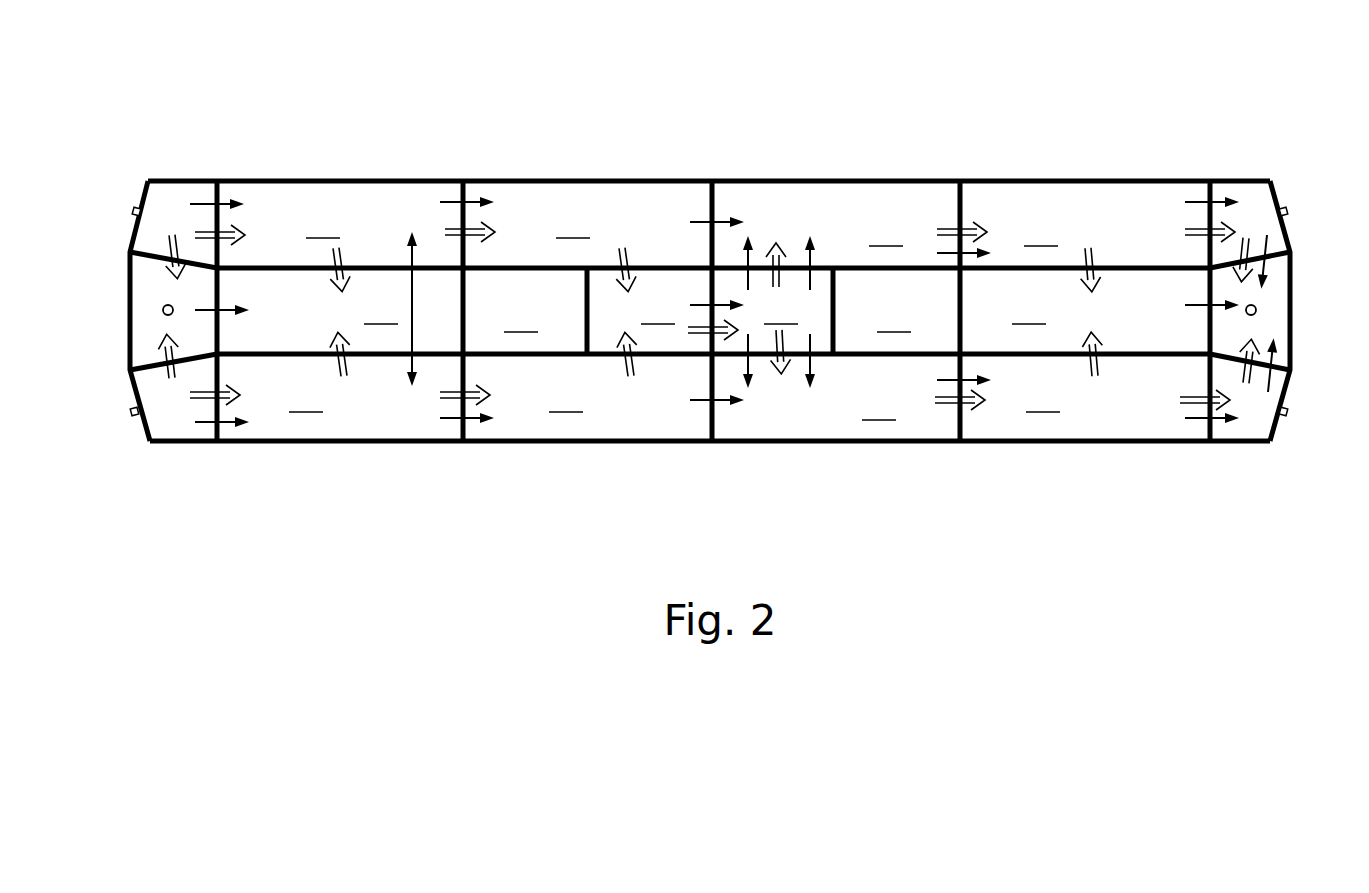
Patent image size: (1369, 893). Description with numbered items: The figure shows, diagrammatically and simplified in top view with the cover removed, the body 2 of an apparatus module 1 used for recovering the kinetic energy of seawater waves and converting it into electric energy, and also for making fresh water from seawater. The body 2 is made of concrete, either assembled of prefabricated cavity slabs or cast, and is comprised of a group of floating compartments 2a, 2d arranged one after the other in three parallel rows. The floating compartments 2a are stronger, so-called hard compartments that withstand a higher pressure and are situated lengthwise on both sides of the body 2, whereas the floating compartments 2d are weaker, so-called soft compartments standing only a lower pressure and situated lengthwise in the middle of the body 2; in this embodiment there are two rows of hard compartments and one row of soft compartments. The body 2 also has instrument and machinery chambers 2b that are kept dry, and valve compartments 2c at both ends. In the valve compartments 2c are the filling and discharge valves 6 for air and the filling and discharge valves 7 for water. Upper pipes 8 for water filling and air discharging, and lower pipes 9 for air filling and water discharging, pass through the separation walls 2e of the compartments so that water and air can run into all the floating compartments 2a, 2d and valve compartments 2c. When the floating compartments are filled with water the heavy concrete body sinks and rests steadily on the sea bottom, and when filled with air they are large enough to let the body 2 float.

The apparatus module 1 is at (1102, 63).
The body 2 is at (878, 181).
The floating compartments 2a is at (714, 312).
The instrument and machinery chambers 2b is at (706, 311).
The valve compartments 2c is at (175, 193).
The floating compartments 2d is at (715, 310).
The separation walls 2e is at (715, 203).
The filling and discharge valves for air 6 is at (160, 310).
The filling and discharge valves for water 7 is at (136, 210).
The upper pipes 8 is at (948, 407).
The lower pipes 9 is at (453, 423).